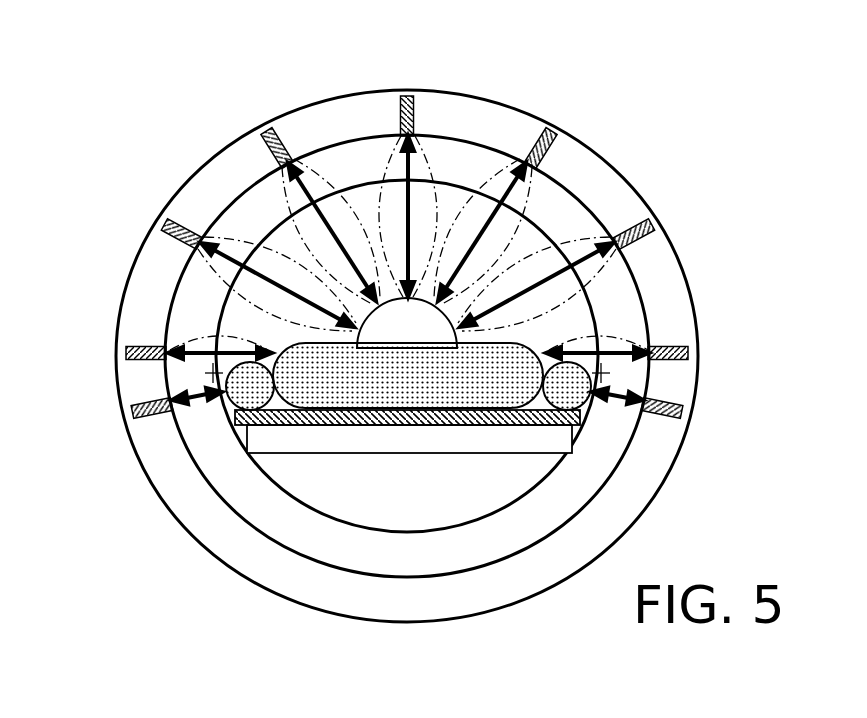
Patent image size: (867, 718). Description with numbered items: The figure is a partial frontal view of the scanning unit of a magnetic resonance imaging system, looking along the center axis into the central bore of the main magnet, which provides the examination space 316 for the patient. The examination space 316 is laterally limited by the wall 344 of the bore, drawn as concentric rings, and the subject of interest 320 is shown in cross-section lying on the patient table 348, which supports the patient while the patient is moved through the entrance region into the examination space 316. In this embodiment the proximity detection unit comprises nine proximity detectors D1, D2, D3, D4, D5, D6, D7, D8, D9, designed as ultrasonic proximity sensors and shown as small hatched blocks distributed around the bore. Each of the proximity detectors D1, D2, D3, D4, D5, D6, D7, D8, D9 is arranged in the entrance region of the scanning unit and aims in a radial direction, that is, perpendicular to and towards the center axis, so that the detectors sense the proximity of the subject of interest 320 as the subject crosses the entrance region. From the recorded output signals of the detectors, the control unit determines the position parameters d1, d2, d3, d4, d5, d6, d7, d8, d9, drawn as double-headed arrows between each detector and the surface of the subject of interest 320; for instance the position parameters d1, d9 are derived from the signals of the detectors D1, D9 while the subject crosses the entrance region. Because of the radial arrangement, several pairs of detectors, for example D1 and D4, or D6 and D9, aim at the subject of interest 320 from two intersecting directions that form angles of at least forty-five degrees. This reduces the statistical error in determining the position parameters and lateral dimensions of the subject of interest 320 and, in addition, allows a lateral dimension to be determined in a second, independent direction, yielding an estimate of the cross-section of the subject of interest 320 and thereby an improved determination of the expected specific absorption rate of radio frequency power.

The examination space 316 is at (433, 506).
The subject of interest 320 is at (433, 391).
The wall 344 is at (292, 498).
The patient table 348 is at (481, 443).
The proximity detector D1 is at (132, 412).
The proximity detector D2 is at (127, 350).
The proximity detector D3 is at (162, 224).
The proximity detector D4 is at (266, 128).
The proximity detector D5 is at (408, 95).
The proximity detector D6 is at (553, 130).
The proximity detector D7 is at (657, 221).
The proximity detector D8 is at (693, 351).
The proximity detector D9 is at (683, 408).
The position parameter d1 is at (197, 382).
The position parameter d2 is at (220, 341).
The position parameter d3 is at (277, 285).
The position parameter d4 is at (332, 232).
The position parameter d5 is at (406, 216).
The position parameter d6 is at (482, 232).
The position parameter d7 is at (536, 285).
The position parameter d8 is at (597, 341).
The position parameter d9 is at (617, 382).